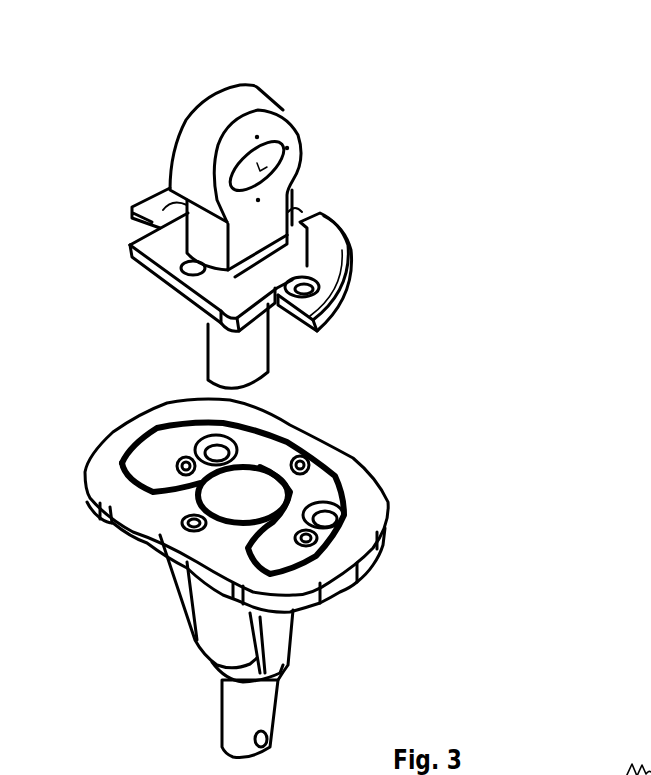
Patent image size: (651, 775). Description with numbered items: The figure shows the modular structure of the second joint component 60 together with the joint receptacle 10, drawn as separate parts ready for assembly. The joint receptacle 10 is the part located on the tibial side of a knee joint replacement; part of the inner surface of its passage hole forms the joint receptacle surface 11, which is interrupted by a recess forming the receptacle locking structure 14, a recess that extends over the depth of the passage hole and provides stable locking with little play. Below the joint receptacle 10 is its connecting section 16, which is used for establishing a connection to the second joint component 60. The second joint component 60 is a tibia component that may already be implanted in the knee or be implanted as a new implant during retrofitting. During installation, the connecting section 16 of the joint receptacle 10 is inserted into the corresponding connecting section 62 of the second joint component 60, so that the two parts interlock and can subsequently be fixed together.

The joint receptacle 10 is at (370, 77).
The joint receptacle surface 11 is at (376, 161).
The receptacle locking structure 14 is at (280, 6).
The connecting section 16 is at (372, 355).
The second joint component 60 is at (508, 504).
The connecting section 62 is at (83, 624).